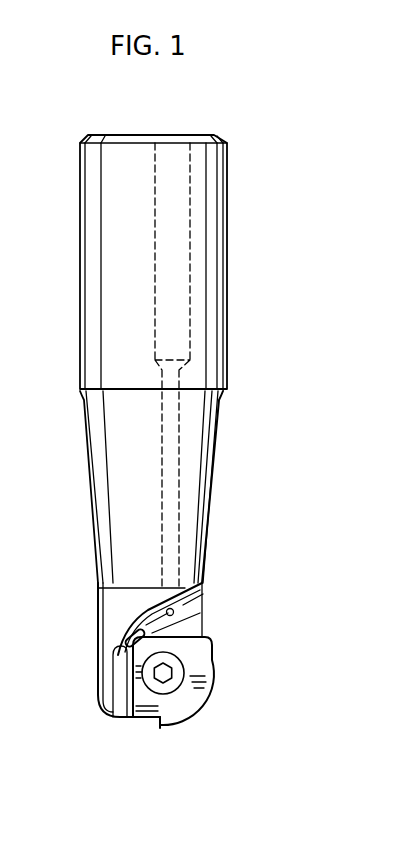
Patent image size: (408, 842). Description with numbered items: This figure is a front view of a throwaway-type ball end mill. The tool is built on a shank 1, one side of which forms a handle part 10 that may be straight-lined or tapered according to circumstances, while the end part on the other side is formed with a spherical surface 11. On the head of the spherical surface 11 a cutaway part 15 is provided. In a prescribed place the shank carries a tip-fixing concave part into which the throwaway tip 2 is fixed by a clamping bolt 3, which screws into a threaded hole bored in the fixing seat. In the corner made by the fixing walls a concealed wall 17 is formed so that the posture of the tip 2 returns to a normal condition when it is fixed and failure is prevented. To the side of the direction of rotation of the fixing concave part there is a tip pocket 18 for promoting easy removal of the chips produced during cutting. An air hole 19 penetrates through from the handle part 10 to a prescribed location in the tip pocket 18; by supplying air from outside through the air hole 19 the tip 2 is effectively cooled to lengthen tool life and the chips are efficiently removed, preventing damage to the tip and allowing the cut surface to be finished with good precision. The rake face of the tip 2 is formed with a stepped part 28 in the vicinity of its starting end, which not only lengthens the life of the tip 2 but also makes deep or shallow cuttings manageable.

The shank 1 is at (228, 308).
The handle part 10 is at (228, 222).
The spherical surface 11 is at (105, 712).
The throwaway tip 2 is at (206, 698).
The clamping bolt 3 is at (172, 688).
The cutaway part 15 is at (122, 723).
The concealed wall 17 is at (128, 641).
The tip pocket 18 is at (152, 614).
The air hole 19 is at (176, 609).
The stepped part 28 is at (143, 722).